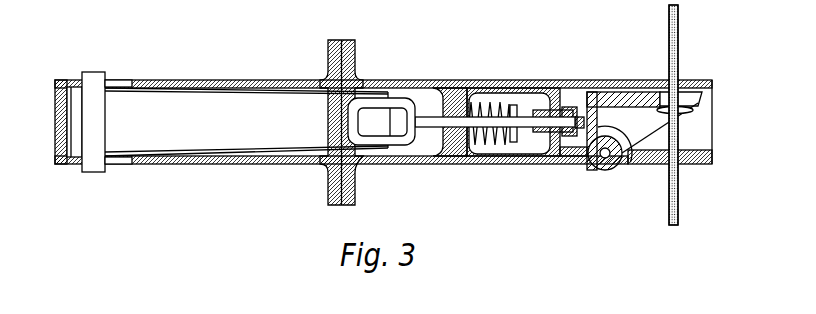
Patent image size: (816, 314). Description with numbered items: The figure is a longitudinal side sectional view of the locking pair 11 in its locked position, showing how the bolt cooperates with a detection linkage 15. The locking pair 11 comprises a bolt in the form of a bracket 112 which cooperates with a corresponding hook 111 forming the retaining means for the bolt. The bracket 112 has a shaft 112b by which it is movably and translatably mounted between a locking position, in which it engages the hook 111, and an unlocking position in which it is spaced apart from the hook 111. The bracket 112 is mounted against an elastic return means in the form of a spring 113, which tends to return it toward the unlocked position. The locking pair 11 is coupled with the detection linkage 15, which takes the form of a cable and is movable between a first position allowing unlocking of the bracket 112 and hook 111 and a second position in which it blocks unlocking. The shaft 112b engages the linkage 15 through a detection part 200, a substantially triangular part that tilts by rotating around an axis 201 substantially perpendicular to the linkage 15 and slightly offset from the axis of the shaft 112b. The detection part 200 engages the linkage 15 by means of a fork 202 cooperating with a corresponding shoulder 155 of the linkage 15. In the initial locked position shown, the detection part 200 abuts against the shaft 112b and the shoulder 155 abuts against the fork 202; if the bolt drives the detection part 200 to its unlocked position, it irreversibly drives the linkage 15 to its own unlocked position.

The locking pair 11 is at (260, 196).
The hook 111 is at (193, 110).
The bracket 112 is at (427, 120).
The shaft 112b is at (525, 120).
The spring 113 is at (493, 140).
The detection linkage 15 is at (678, 43).
The shoulder 155 is at (680, 109).
The detection part 200 is at (630, 145).
The axis 201 is at (604, 155).
The fork 202 is at (665, 97).